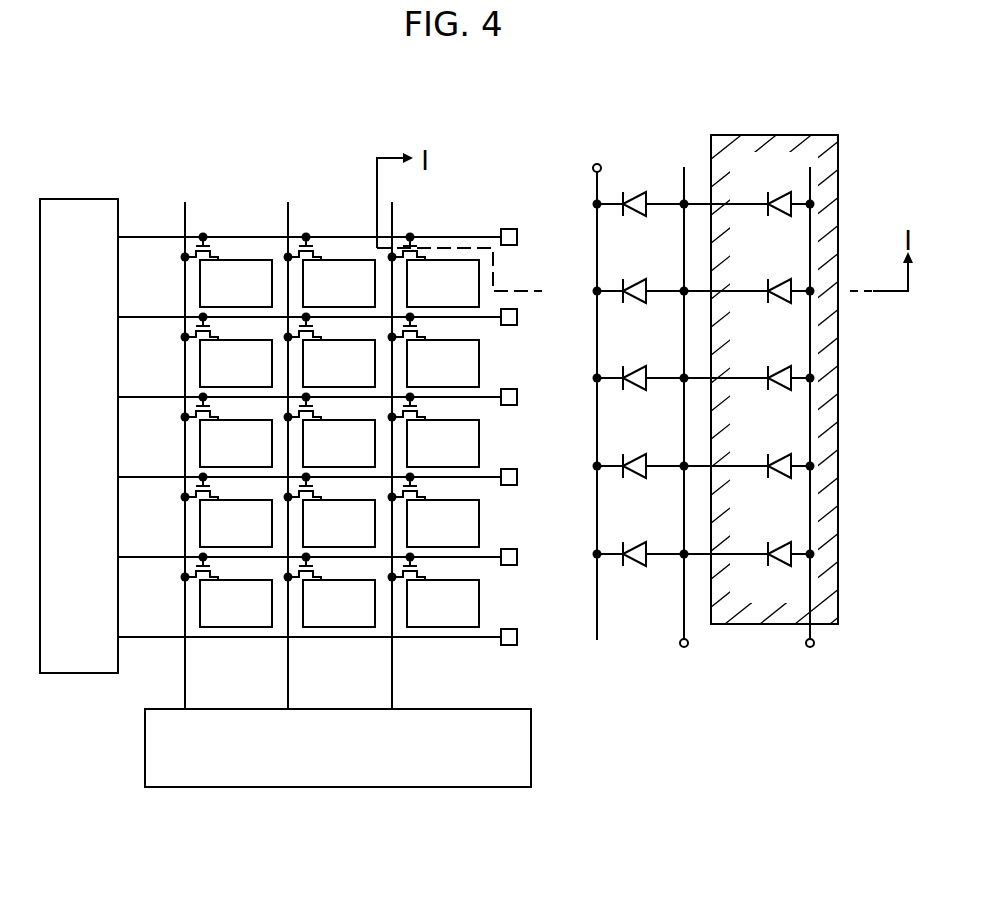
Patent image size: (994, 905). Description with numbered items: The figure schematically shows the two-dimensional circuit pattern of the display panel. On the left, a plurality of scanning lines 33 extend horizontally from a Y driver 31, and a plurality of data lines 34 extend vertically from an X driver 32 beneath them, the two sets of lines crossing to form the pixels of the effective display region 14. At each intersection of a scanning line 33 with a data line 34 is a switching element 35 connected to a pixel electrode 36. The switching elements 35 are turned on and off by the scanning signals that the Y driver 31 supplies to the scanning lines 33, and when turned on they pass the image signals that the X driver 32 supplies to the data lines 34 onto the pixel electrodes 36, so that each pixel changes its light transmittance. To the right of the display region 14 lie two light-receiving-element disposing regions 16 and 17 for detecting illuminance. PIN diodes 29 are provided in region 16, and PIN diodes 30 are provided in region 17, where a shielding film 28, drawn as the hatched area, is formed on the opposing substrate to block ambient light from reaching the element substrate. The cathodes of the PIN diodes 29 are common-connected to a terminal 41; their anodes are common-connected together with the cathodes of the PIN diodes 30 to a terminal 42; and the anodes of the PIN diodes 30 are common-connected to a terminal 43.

The effective display region 14 is at (138, 92).
The light-receiving-element disposing region 16 is at (577, 93).
The light-receiving-element disposing region 17 is at (705, 93).
The shielding film 28 is at (838, 224).
The PIN diode 29 is at (637, 192).
The PIN diode 30 is at (783, 197).
The Y driver 31 is at (77, 199).
The X driver 32 is at (333, 787).
The scanning line 33 is at (163, 258).
The data line 34 is at (287, 677).
The switching element 35 is at (215, 247).
The pixel electrode 36 is at (342, 263).
The terminal 41 is at (592, 168).
The terminal 42 is at (687, 647).
The terminal 43 is at (814, 643).